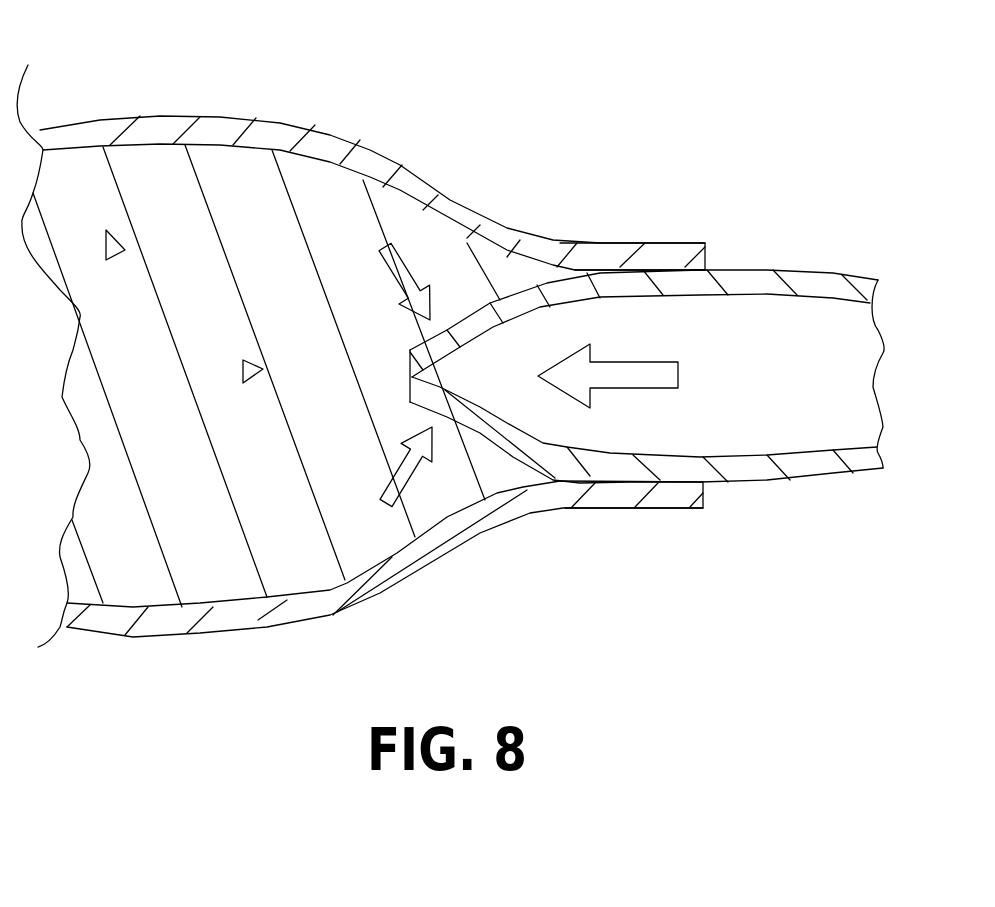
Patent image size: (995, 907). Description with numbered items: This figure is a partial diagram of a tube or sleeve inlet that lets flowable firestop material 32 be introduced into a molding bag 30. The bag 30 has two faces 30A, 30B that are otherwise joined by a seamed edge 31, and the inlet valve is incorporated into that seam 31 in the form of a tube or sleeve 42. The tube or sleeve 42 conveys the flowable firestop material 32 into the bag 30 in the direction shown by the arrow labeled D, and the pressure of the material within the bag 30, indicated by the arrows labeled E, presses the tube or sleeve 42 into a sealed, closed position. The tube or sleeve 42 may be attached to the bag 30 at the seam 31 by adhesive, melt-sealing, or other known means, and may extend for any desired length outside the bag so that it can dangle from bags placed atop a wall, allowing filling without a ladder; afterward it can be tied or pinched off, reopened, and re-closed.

The bag 30 is at (472, 195).
The face 30A is at (547, 250).
The face 30B is at (535, 500).
The seamed edge 31 is at (750, 253).
The flowable firestop material 32 is at (290, 147).
The tube or sleeve 42 is at (785, 497).